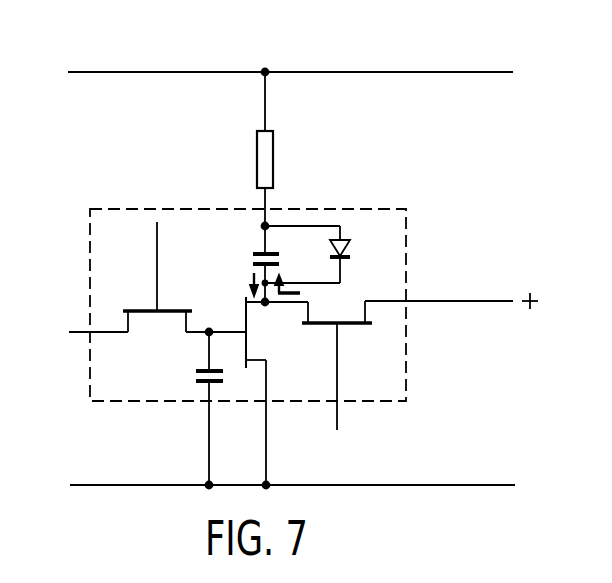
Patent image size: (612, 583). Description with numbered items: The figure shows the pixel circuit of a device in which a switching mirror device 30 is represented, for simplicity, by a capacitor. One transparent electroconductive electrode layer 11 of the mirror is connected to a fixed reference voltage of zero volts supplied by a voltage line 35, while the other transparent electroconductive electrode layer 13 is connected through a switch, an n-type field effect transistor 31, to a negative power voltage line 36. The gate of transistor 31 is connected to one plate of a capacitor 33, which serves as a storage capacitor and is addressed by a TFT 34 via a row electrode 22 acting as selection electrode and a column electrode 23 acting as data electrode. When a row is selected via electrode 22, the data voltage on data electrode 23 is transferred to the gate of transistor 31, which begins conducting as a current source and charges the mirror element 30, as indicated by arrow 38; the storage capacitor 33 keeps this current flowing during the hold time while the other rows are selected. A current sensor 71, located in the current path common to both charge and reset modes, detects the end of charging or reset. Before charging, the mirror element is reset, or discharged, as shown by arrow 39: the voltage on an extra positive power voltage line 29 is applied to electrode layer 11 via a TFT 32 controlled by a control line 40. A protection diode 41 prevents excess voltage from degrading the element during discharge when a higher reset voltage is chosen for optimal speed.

The voltage line 35 is at (355, 72).
The current sensor 71 is at (257, 160).
The switching mirror device 30 is at (283, 244).
The transparent electroconductive electrode layer 13 is at (253, 252).
The transparent electroconductive electrode layer 11 is at (253, 265).
The arrow 38 is at (251, 280).
The arrow 39 is at (293, 290).
The protection diode 41 is at (346, 243).
The row electrode 22 is at (153, 247).
The column electrode 23 is at (107, 330).
The TFT 34 is at (156, 315).
The capacitor 33 is at (207, 387).
The n-type field effect transistor 31 is at (246, 345).
The TFT 32 is at (351, 321).
The positive power voltage line 29 is at (438, 301).
The control line 40 is at (337, 380).
The negative power voltage line 36 is at (443, 485).